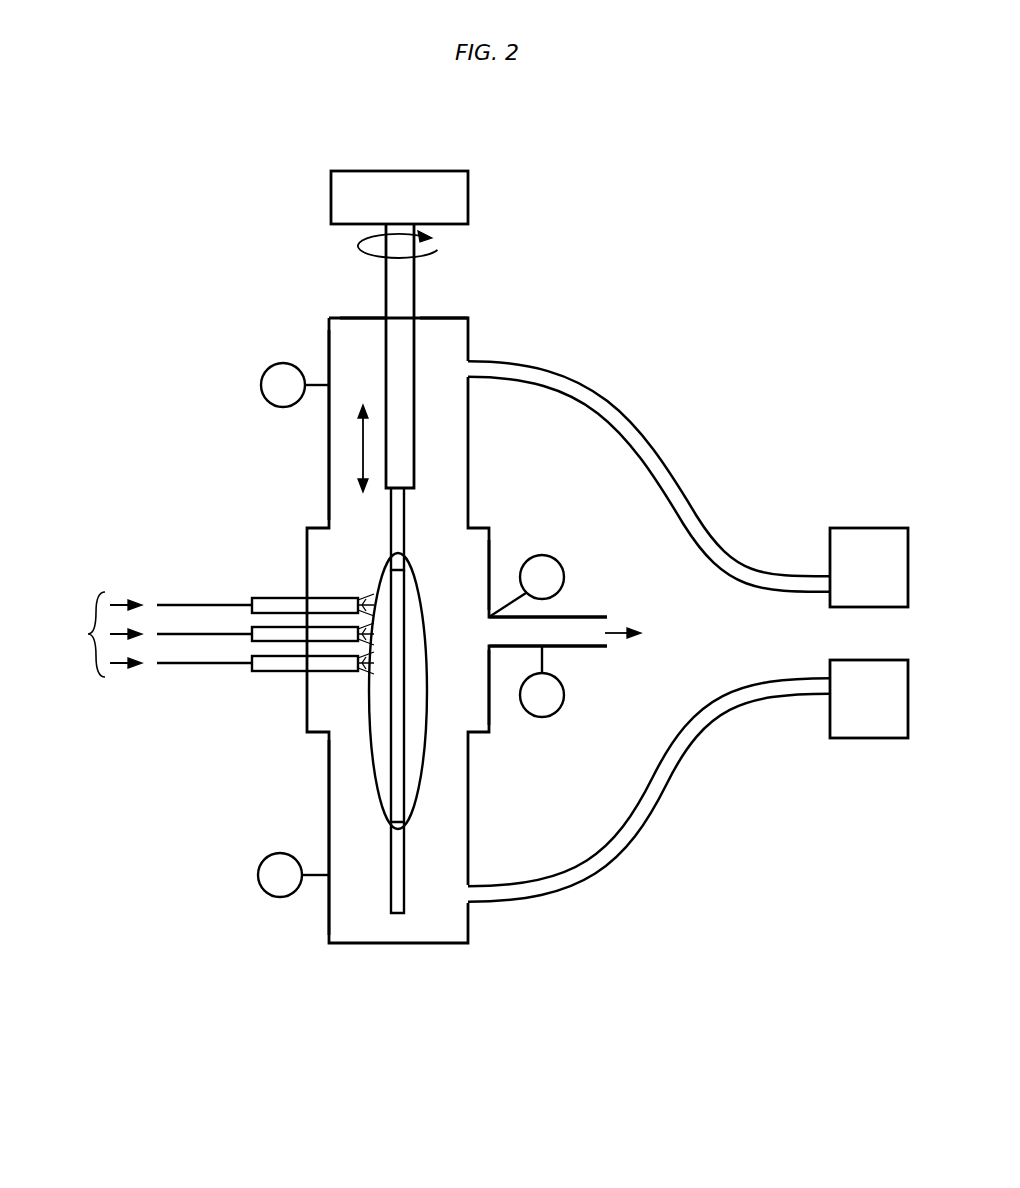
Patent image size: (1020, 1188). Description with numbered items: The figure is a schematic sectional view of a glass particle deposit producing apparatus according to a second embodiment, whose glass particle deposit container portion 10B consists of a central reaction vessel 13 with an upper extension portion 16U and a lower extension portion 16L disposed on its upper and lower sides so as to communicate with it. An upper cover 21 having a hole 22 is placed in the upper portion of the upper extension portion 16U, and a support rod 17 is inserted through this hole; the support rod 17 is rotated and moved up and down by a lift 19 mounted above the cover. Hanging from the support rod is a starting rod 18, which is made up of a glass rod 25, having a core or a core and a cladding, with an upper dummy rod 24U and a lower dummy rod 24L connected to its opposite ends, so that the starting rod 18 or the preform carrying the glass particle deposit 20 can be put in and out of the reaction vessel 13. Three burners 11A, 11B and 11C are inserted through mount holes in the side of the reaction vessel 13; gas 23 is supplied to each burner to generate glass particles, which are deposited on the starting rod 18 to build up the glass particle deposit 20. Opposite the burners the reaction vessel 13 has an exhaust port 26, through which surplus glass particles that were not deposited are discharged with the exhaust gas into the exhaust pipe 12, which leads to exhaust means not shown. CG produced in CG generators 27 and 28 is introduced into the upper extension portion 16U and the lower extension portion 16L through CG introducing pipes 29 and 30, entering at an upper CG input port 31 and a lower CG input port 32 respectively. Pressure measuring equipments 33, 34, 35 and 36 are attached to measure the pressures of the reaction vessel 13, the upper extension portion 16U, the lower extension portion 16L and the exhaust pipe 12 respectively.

The glass particle deposit container portion 10B is at (232, 494).
The burner 11A is at (266, 598).
The burner 11B is at (252, 633).
The burner 11C is at (265, 672).
The exhaust pipe 12 is at (580, 648).
The reaction vessel 13 is at (482, 552).
The upper extension portion 16U is at (340, 456).
The lower extension portion 16L is at (343, 822).
The support rod 17 is at (402, 290).
The starting rod 18 is at (382, 745).
The lift 19 is at (448, 206).
The glass particle deposit 20 is at (418, 798).
The upper cover 21 is at (468, 318).
The hole 22 is at (394, 322).
The gas 23 is at (151, 634).
The dummy rod 24U is at (404, 508).
The dummy rod 24L is at (393, 912).
The glass rod 25 is at (396, 737).
The exhaust port 26 is at (480, 633).
The CG generator 27 is at (845, 528).
The CG generator 28 is at (850, 738).
The CG introducing pipe 29 is at (617, 400).
The CG introducing pipe 30 is at (695, 748).
The upper CG input port 31 is at (465, 367).
The lower CG input port 32 is at (468, 900).
The pressure measuring equipment 33 is at (564, 578).
The pressure measuring equipment 34 is at (283, 363).
The pressure measuring equipment 35 is at (280, 897).
The pressure measuring equipment 36 is at (563, 702).